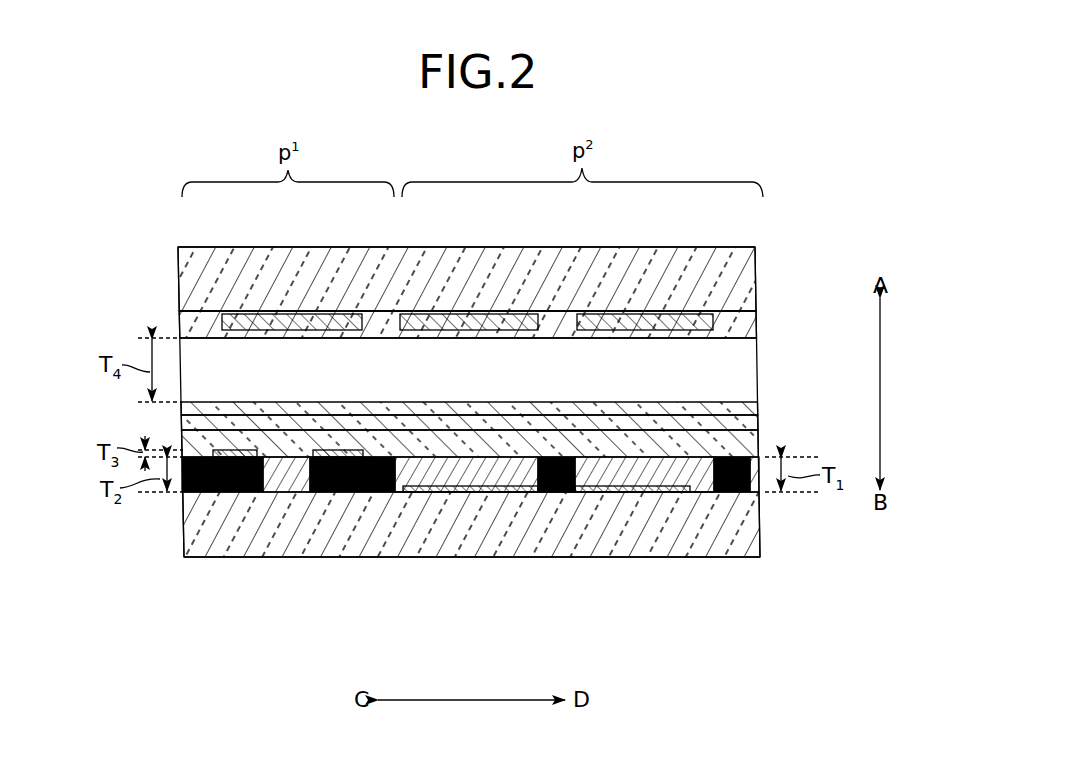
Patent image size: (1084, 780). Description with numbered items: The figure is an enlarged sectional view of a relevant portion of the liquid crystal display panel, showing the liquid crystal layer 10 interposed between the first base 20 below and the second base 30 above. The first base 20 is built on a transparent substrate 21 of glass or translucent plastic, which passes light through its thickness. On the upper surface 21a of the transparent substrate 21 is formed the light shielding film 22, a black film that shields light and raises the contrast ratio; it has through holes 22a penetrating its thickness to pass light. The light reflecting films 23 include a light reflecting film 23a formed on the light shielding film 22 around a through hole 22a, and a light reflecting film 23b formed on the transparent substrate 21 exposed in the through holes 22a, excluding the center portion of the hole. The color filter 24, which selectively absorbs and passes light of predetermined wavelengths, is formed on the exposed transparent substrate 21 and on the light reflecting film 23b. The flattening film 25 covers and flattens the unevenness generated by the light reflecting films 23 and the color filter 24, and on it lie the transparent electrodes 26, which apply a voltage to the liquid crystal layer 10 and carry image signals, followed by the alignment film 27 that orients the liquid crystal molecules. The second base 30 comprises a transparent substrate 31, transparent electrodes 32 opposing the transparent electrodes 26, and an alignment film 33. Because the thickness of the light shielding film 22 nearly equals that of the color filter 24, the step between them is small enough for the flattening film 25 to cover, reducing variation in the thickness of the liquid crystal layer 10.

The liquid crystal layer 10 is at (740, 375).
The first base 20 is at (756, 566).
The transparent substrate 21 is at (748, 547).
The upper surface 21a is at (512, 495).
The light shielding film 22 is at (201, 486).
The through holes 22a is at (706, 478).
The light reflecting films 23 is at (503, 561).
The light reflecting film 23a is at (257, 458).
The light reflecting film 23b is at (577, 534).
The color filter 24 is at (655, 488).
The flattening film 25 is at (748, 446).
The transparent electrodes 26 is at (183, 428).
The alignment film 27 is at (748, 411).
The second base 30 is at (748, 240).
The transparent substrate 31 is at (736, 279).
The transparent electrodes 32 is at (722, 317).
The alignment film 33 is at (192, 326).